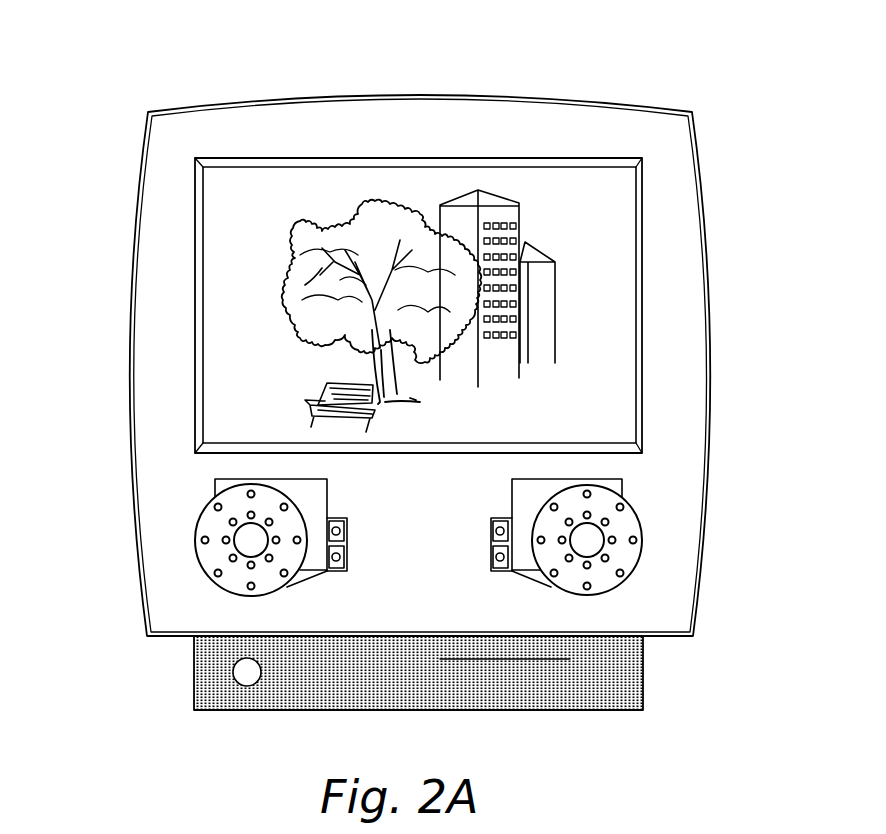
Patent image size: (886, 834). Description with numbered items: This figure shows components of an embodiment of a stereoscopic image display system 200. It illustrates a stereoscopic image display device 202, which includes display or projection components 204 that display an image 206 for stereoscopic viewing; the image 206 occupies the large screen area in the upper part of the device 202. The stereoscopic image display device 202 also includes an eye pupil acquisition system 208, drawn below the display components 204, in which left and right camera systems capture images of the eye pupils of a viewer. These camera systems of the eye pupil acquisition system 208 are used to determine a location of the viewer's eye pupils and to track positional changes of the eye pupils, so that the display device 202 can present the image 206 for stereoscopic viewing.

The stereoscopic image display system 200 is at (663, 75).
The stereoscopic image display device 202 is at (703, 202).
The display components 204 is at (475, 152).
The image 206 is at (302, 208).
The eye pupil acquisition system 208 is at (173, 493).